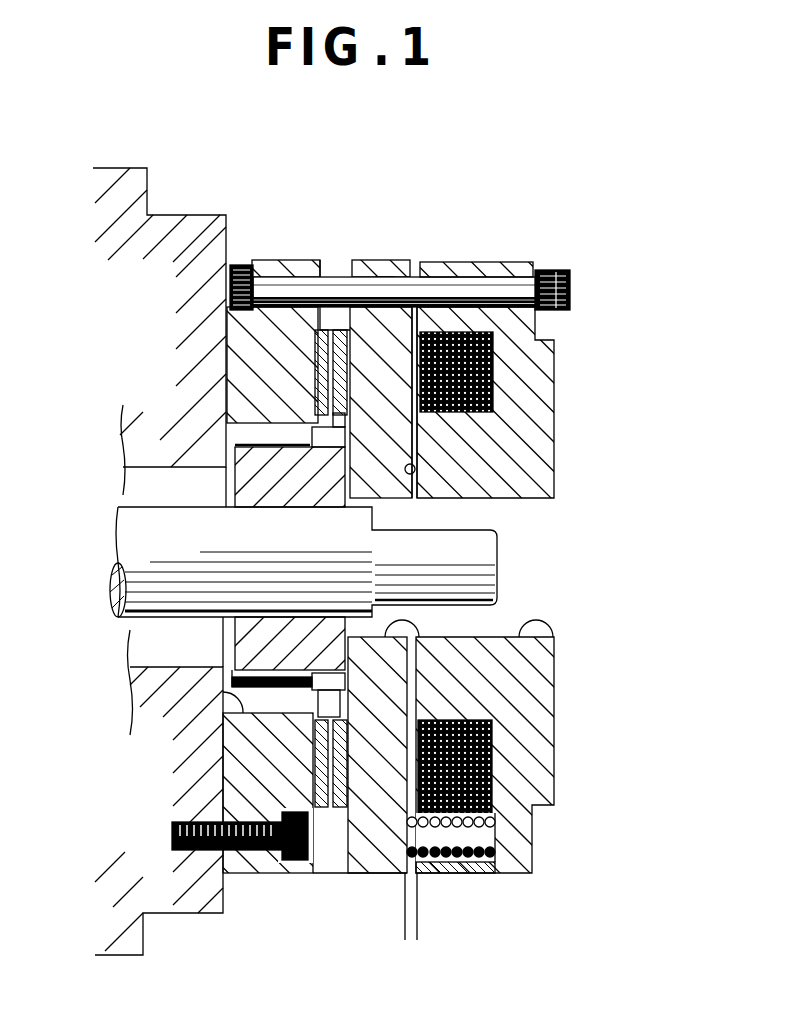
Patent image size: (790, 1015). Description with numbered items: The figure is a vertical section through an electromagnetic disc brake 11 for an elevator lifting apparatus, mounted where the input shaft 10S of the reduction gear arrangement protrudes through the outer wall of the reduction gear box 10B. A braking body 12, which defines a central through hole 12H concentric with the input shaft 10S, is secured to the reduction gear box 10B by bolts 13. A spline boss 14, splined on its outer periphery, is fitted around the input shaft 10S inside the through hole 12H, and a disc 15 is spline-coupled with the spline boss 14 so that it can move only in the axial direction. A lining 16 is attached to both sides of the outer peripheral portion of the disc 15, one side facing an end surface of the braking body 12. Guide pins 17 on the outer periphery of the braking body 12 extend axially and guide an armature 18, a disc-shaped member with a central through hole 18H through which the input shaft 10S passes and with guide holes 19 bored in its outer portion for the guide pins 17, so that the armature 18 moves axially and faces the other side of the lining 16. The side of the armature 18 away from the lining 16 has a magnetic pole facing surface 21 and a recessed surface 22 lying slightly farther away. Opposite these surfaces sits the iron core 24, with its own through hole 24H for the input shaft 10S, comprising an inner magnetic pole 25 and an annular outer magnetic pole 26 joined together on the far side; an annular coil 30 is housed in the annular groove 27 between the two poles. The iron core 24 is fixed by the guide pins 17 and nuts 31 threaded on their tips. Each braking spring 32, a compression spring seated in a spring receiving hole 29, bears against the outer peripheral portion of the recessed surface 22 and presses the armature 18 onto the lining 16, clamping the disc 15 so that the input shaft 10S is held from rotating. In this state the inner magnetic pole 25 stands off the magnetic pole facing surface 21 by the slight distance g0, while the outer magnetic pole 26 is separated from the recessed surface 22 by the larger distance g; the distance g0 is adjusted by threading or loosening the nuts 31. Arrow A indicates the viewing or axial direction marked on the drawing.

The electromagnetic disc brake 11 is at (148, 337).
The reduction gear box 10B is at (174, 897).
The input shaft 10S is at (119, 515).
The braking body 12 is at (275, 268).
The through hole 12H is at (226, 685).
The bolts 13 is at (272, 850).
The spline boss 14 is at (248, 490).
The disc 15 is at (322, 808).
The lining 16 is at (340, 808).
The guide pins 17 is at (291, 282).
The armature 18 is at (367, 261).
The through hole 18H is at (419, 630).
The guide holes 19 is at (396, 262).
The magnetic pole facing surface 21 is at (420, 433).
The recessed surface 22 is at (450, 231).
The iron core 24 is at (518, 262).
The through hole 24H is at (553, 631).
The inner magnetic pole 25 is at (416, 470).
The outer magnetic pole 26 is at (490, 262).
The annular groove 27 is at (498, 356).
The spring receiving holes 29 is at (441, 873).
The annular coil 30 is at (498, 388).
The nuts 31 is at (558, 272).
The braking springs 32 is at (494, 873).
The direction A is at (570, 570).
The distance g is at (420, 935).
The distance g0 is at (450, 691).